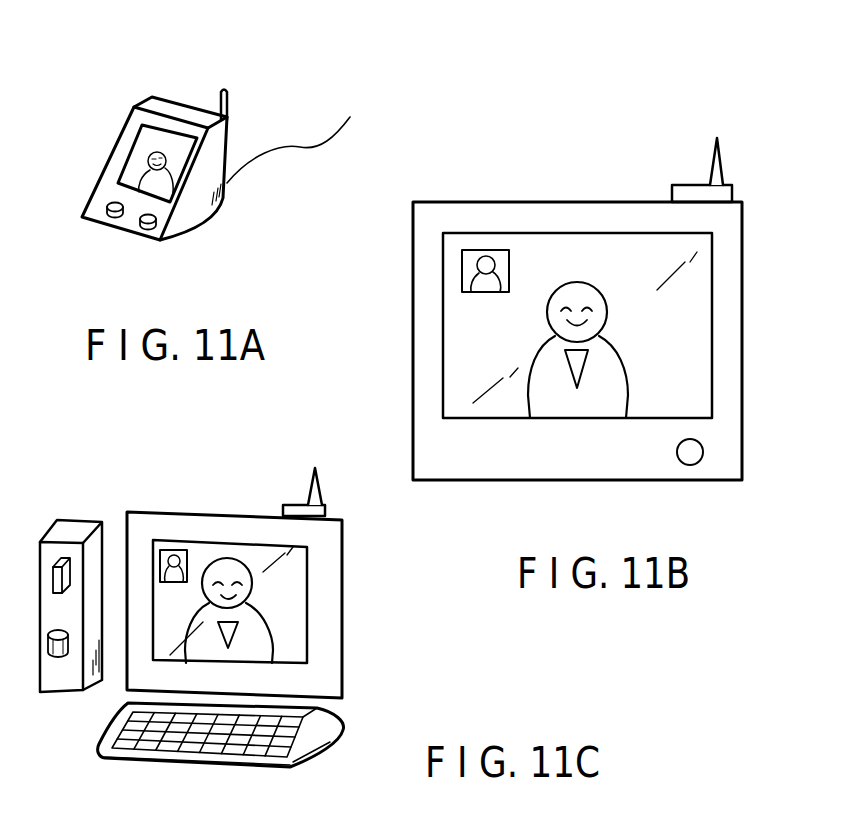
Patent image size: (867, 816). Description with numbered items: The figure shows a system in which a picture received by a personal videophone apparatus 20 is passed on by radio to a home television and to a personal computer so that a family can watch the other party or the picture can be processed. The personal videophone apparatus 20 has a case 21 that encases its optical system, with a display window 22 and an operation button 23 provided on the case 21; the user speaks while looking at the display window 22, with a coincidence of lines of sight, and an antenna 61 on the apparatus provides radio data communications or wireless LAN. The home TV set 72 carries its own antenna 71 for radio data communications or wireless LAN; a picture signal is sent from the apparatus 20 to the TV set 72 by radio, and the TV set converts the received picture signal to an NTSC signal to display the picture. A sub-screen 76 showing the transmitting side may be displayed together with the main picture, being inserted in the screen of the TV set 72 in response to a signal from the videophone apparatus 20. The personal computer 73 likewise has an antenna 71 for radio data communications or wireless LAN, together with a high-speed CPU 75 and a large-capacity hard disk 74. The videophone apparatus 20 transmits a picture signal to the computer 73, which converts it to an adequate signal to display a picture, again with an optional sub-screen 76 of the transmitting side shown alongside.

In FIG. 11A, the personal videophone apparatus 20 is at (177, 80).
In FIG. 11A, the case 21 is at (193, 210).
In FIG. 11A, the display window 22 is at (140, 173).
In FIG. 11A, the operation button 23 is at (145, 228).
In FIG. 11A, the antenna 61 is at (226, 92).
In FIG. 11B, the antenna 71 is at (712, 170).
In FIG. 11C, the antenna 71 is at (308, 483).
In FIG. 11B, the home TV set 72 is at (702, 328).
In FIG. 11C, the personal computer 73 is at (343, 603).
In FIG. 11C, the large-capacity hard disk 74 is at (55, 655).
In FIG. 11C, the high-speed CPU 75 is at (62, 557).
In FIG. 11B, the sub-screen 76 is at (472, 272).
In FIG. 11C, the sub-screen 76 is at (180, 550).